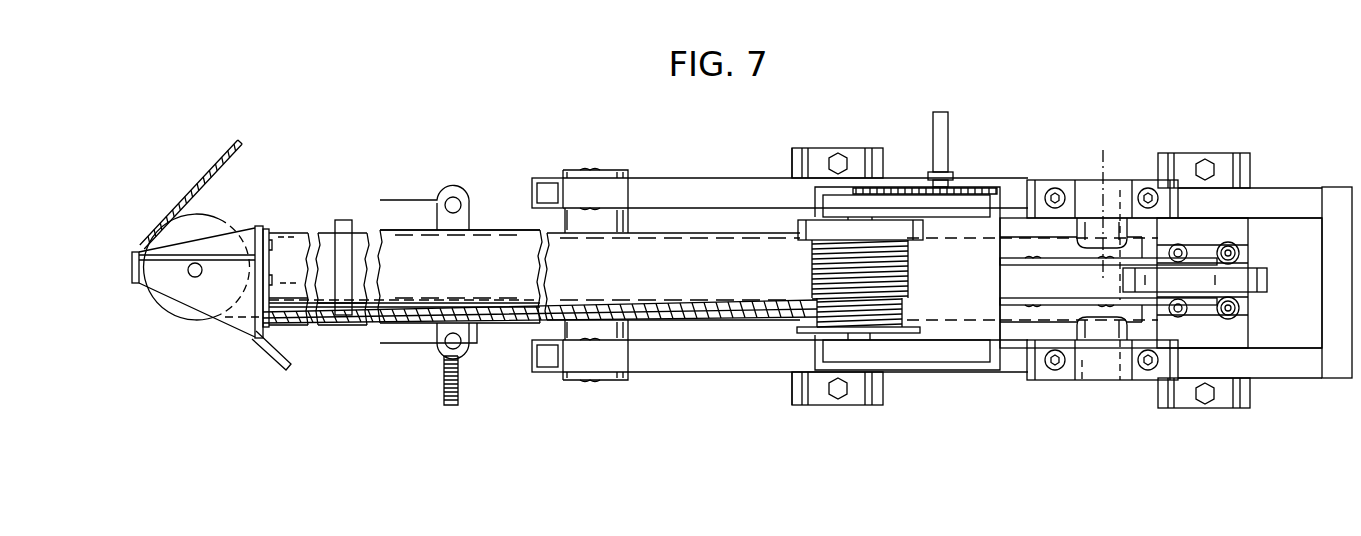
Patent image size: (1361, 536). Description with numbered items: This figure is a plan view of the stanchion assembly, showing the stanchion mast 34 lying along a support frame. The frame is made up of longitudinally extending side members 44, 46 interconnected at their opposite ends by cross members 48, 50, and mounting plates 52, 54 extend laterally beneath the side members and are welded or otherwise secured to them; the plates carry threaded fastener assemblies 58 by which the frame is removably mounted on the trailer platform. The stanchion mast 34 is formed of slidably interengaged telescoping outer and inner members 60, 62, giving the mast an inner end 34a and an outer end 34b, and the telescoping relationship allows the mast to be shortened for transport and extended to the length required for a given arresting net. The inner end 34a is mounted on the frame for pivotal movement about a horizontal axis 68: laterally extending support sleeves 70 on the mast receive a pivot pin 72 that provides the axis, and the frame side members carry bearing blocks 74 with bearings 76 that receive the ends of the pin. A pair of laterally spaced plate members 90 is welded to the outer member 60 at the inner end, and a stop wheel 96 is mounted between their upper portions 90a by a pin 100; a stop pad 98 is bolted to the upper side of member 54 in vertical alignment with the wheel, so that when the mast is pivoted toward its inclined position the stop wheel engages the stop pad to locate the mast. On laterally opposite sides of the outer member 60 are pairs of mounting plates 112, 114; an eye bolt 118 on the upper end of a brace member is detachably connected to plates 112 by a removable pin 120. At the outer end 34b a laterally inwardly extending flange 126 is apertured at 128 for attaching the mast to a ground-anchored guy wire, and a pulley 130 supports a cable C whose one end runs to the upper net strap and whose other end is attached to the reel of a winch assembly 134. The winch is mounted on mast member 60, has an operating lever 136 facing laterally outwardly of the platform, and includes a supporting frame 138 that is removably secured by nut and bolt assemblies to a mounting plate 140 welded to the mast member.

The pulley 130 is at (180, 310).
The aperture 128 is at (278, 362).
The flange 126 is at (277, 233).
The inner mast member 62 is at (297, 243).
The outer end of stanchion mast 34b is at (290, 300).
The outer mast member 60 is at (500, 247).
The mounting plates 114 is at (408, 208).
The mounting plates 112 is at (402, 337).
The removable pin 120 is at (457, 342).
The eye bolt 118 is at (443, 393).
The stanchion mast 34 is at (723, 230).
The side member 46 is at (632, 187).
The side member 44 is at (637, 367).
The cross member 48 is at (590, 332).
The threaded fastener assemblies 58 is at (843, 152).
The mounting plate 52 is at (813, 402).
The mounting plate 54 is at (1182, 407).
The mounting plate 140 is at (1002, 335).
The winch supporting frame 138 is at (902, 203).
The operating lever 136 is at (950, 152).
The winch assembly 134 is at (795, 343).
The inner end of stanchion mast 34a is at (1045, 240).
The plate members 90 is at (1066, 298).
The stop wheel 96 is at (1268, 280).
The pin 100 is at (1197, 310).
The upper portions of plate members 90a is at (1212, 245).
The stop pad 98 is at (1213, 315).
The cross member 50 is at (1340, 205).
The bearing blocks 74 is at (1150, 187).
The support sleeves 70 is at (1093, 227).
The horizontal axis 68 is at (1105, 150).
The bearings 76 is at (1121, 240).
The pivot pin 72 is at (1082, 360).
The cable C is at (208, 172).